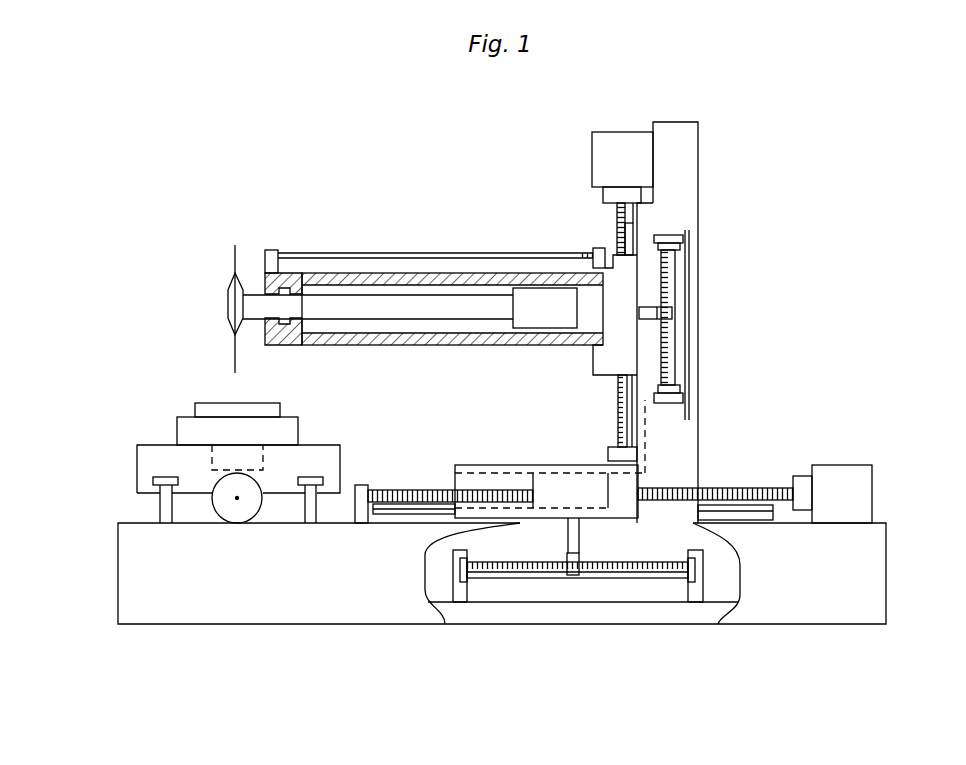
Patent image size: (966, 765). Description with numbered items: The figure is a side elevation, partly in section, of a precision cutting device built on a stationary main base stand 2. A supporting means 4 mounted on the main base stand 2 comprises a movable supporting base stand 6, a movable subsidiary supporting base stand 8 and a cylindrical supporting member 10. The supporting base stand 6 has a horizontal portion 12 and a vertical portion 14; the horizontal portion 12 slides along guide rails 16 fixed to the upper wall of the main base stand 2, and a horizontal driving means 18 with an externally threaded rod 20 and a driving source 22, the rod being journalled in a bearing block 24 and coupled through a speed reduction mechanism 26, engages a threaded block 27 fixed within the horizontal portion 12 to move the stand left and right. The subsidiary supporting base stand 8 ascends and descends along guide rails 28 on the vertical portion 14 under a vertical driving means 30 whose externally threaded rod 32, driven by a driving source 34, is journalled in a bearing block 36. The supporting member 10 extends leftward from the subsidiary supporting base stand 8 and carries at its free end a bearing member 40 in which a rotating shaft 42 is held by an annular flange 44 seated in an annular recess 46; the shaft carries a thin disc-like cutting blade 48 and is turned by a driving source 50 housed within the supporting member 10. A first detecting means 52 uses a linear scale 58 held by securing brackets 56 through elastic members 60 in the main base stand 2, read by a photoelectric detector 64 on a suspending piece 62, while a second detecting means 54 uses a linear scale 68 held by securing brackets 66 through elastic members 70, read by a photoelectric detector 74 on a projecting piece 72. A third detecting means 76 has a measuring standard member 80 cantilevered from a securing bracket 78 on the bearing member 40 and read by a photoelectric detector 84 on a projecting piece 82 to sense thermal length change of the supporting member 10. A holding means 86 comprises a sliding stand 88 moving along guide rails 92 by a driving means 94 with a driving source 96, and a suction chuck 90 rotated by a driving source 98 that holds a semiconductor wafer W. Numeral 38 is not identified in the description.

The main base stand 2 is at (888, 545).
The supporting means 4 is at (714, 307).
The movable supporting base stand 6 is at (700, 440).
The movable subsidiary supporting base stand 8 is at (592, 366).
The supporting member 10 is at (405, 345).
The horizontal portion 12 is at (472, 466).
The vertical portion 14 is at (698, 168).
The guide rails 16 is at (422, 500).
The horizontal driving means 18 is at (800, 462).
The externally threaded rod 20 is at (731, 488).
The driving source 22 is at (852, 465).
The bearing block 24 is at (362, 485).
The speed reduction mechanism 26 is at (800, 510).
The block 27 is at (553, 472).
The guide rails 28 is at (618, 402).
The vertical driving means 30 is at (614, 222).
The externally threaded rod 32 is at (625, 245).
The driving source 34 is at (592, 140).
The bearing block 36 is at (608, 455).
The coupling 38 is at (603, 193).
The bearing member 40 is at (273, 345).
The rotating shaft 42 is at (355, 320).
The annular flange 44 is at (296, 345).
The annular recess 46 is at (300, 273).
The cutting blade 48 is at (234, 360).
The driving source 50 is at (540, 310).
The first detecting means 52 is at (571, 593).
The second detecting means 54 is at (615, 315).
The securing brackets 56 is at (455, 565).
The linear scale 58 is at (612, 580).
The elastic members 60 is at (470, 590).
The suspending piece 62 is at (580, 545).
The photoelectric detector 64 is at (571, 575).
The securing brackets 66 is at (660, 240).
The linear scale 68 is at (670, 350).
The elastic members 70 is at (675, 247).
The projecting piece 72 is at (660, 330).
The photoelectric detector 74 is at (662, 313).
The third detecting means 76 is at (394, 286).
The securing bracket 78 is at (271, 250).
The measuring standard member 80 is at (428, 253).
The projecting piece 82 is at (586, 256).
The photoelectric detector 84 is at (590, 264).
The holding means 86 is at (210, 471).
The sliding stand 88 is at (137, 455).
The suction chuck 90 is at (185, 420).
The guide rails 92 is at (160, 505).
The driving means 94 is at (205, 515).
The driving source 96 is at (240, 505).
The driving source 98 is at (263, 458).
The semiconductor wafer W is at (224, 405).